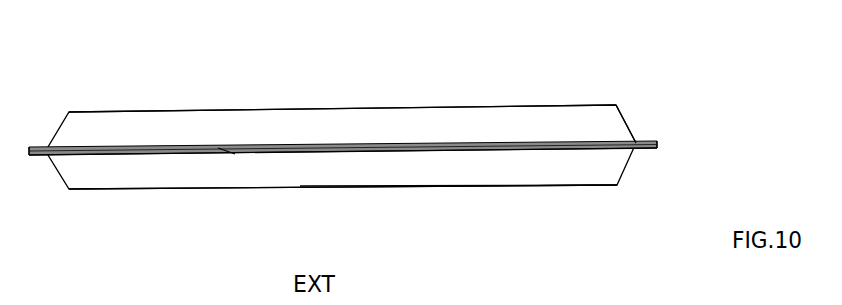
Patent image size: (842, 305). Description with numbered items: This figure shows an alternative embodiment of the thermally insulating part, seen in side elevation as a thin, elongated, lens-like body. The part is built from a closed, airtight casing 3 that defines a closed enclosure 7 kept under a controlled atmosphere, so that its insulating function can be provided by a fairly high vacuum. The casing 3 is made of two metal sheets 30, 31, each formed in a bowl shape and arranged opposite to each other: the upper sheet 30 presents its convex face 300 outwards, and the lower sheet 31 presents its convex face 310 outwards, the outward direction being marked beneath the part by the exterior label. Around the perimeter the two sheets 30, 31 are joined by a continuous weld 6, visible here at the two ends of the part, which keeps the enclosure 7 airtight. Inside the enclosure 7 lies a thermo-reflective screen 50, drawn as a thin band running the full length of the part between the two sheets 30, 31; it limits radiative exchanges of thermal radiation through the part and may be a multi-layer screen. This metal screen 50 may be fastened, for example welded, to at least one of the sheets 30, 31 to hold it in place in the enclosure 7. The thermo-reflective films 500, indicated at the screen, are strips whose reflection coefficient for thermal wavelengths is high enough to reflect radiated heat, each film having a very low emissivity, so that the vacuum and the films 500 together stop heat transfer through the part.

The casing 3 is at (265, 101).
The continuous weld 6 is at (40, 151).
The enclosure 7 is at (488, 131).
The metal sheet 30 is at (144, 101).
The metal sheet 31 is at (131, 189).
The thermo-reflective screen 50 is at (489, 153).
The convex face 300 is at (632, 123).
The convex face 310 is at (358, 189).
The thermo-reflective film 500 is at (218, 148).